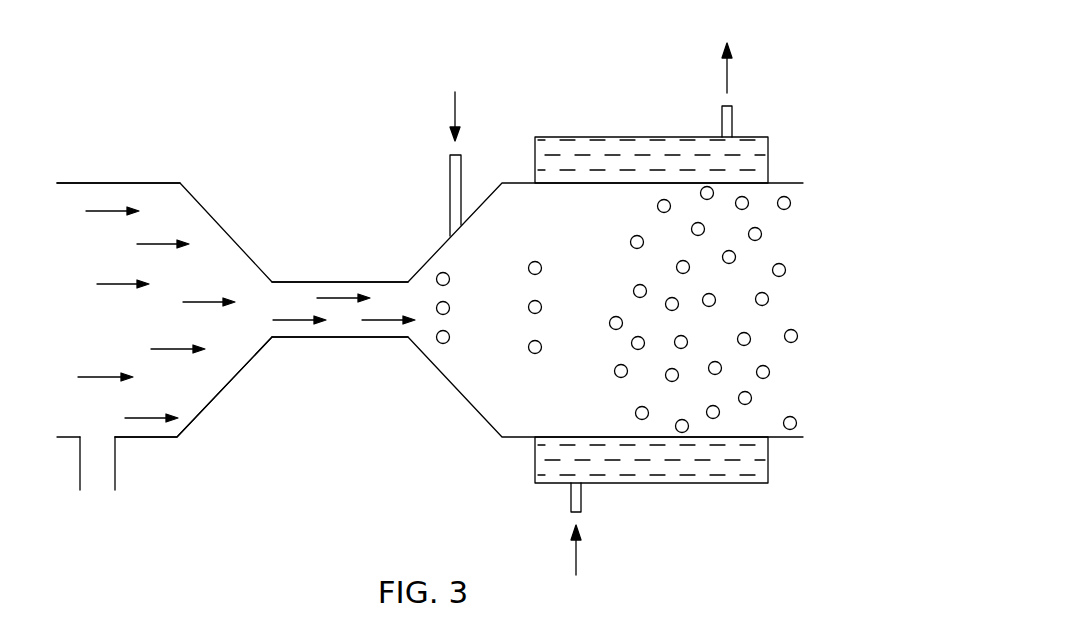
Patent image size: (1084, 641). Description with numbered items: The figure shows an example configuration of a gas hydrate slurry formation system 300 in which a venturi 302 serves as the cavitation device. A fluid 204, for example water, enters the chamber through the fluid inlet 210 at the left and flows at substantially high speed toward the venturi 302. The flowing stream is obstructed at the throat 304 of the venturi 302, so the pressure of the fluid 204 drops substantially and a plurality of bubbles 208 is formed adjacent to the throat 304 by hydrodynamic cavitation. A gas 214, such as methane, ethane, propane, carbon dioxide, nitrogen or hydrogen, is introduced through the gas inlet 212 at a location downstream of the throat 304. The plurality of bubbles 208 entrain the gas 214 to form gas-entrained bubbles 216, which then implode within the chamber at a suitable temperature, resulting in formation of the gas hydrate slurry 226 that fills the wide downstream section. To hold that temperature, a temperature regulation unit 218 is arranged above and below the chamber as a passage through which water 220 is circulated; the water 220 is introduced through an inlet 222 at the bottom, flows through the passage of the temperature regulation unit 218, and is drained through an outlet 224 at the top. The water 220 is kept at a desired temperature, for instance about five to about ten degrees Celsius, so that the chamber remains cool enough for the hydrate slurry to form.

The gas hydrate slurry formation system 300 is at (793, 63).
The fluid 204 is at (103, 211).
The fluid inlet 210 is at (96, 470).
The venturi 302 is at (177, 438).
The throat 304 is at (300, 282).
The plurality of bubbles 208 is at (437, 343).
The gas inlet 212 is at (450, 152).
The gas 214 is at (456, 116).
The gas-entrained bubbles 216 is at (529, 303).
The water 220 is at (585, 152).
The outlet 224 is at (722, 108).
The gas hydrate slurry 226 is at (790, 233).
The temperature regulation unit 218 is at (740, 485).
The inlet 222 is at (578, 515).